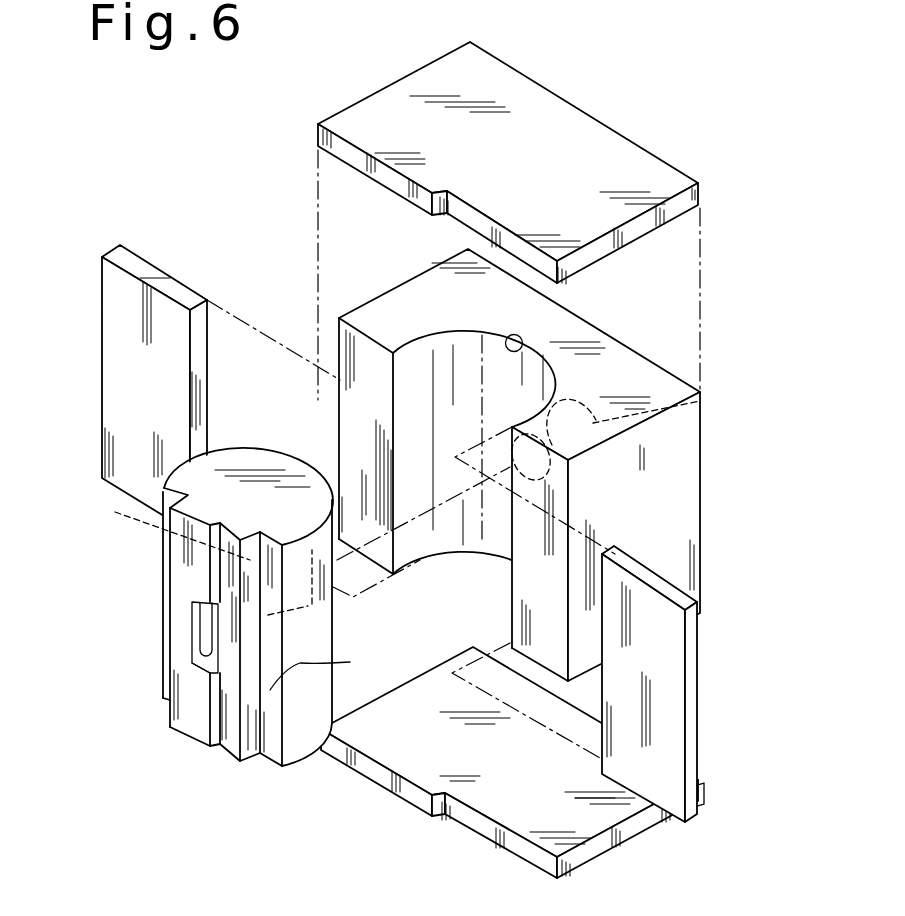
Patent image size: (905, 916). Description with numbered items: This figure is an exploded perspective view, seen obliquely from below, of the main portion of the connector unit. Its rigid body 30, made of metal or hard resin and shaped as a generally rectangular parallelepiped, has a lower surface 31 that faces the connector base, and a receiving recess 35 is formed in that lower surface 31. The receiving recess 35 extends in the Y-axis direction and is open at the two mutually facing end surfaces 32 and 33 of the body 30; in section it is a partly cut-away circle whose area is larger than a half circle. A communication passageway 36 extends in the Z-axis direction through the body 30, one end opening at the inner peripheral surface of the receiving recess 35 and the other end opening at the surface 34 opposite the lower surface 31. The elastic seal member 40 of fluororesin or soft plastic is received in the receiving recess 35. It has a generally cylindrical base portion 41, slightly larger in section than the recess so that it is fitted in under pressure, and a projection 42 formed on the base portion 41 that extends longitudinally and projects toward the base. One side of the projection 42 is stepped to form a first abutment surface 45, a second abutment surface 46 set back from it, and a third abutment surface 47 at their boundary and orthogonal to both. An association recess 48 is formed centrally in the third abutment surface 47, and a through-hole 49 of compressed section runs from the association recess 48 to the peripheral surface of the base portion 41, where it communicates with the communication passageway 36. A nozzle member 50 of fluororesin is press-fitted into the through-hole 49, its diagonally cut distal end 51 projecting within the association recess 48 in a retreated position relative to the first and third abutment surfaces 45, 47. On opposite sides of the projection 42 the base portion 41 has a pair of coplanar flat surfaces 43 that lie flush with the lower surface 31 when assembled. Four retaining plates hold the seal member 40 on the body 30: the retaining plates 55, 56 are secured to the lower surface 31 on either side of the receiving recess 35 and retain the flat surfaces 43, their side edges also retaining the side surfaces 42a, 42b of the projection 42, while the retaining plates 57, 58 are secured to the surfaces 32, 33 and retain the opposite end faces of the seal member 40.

The body 30 is at (584, 465).
The lower surface 31 is at (556, 478).
The surface 32 is at (642, 380).
The surface 33 is at (430, 558).
The surface 34 is at (622, 372).
The receiving recess 35 is at (523, 343).
The communication passageway 36 is at (700, 405).
The seal member 40 is at (211, 602).
The base portion 41 is at (263, 447).
The projection 42 is at (219, 602).
The side surface of projection 42a is at (165, 567).
The side surface of projection 42b is at (262, 722).
The flat surfaces 43 is at (185, 490).
The first abutment surface 45 is at (198, 708).
The second abutment surface 46 is at (330, 667).
The third abutment surface 47 is at (218, 688).
The association recess 48 is at (197, 640).
The through-hole 49 is at (322, 616).
The nozzle member 50 is at (162, 527).
The distal end 51 is at (200, 628).
The retaining plate 55 is at (150, 262).
The retaining plate 56 is at (700, 643).
The retaining plate 57 is at (607, 160).
The retaining plate 58 is at (480, 818).